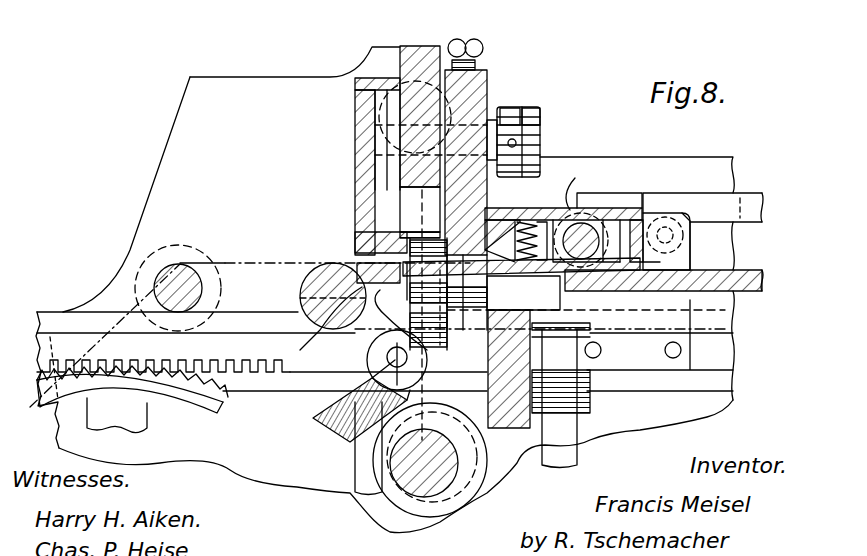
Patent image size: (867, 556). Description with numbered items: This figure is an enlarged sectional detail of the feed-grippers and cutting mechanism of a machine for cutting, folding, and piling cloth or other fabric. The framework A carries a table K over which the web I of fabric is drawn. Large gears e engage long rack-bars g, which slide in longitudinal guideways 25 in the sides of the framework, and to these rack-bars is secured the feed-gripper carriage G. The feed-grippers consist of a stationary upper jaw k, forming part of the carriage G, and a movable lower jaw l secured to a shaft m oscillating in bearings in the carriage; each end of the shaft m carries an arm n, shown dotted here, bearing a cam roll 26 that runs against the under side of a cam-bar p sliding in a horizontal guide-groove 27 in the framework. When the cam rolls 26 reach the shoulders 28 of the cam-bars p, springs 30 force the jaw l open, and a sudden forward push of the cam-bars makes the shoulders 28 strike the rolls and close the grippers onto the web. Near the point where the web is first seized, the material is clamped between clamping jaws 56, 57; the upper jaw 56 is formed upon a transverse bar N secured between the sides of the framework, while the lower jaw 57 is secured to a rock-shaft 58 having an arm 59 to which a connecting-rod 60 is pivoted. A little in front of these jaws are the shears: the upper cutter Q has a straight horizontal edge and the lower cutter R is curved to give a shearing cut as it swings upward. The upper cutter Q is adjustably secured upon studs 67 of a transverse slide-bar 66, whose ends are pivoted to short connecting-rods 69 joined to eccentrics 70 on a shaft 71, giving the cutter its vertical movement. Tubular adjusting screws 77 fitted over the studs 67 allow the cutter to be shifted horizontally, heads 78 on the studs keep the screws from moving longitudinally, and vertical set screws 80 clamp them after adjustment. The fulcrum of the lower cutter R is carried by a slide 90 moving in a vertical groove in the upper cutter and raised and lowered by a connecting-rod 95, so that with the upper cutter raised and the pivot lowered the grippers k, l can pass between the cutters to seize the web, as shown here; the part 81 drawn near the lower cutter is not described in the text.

The framework A is at (396, 290).
The rack-bars g is at (163, 355).
The large gears e is at (168, 393).
The web I is at (290, 263).
The movable clamping jaw 57 is at (312, 292).
The rock-shaft 58 is at (305, 301).
The stationary clamping jaw 56 is at (362, 234).
The transverse bar N is at (356, 158).
The transverse slide-bar 66 is at (423, 100).
The set screws 80 is at (480, 42).
The upper cutter Q is at (484, 74).
The studs 67 is at (543, 141).
The tubular adjusting screws 77 is at (505, 110).
The heads 78 is at (532, 107).
The stationary upper gripper jaw k is at (482, 228).
The springs 30 is at (522, 214).
The guide-groove 27 is at (612, 200).
The shaft m is at (586, 219).
The cam roll 26 is at (664, 220).
The shoulder 28 is at (686, 212).
The cam-bar p is at (702, 207).
The feed-gripper carriage G is at (690, 252).
The arm or lever n is at (656, 263).
The table K is at (762, 279).
The movable lower gripper jaw l is at (521, 284).
The lower cutter R is at (500, 430).
The pin 81 is at (578, 461).
The arm or lever 59 is at (363, 338).
The slide 90 is at (457, 340).
The connecting-rod 60 is at (333, 420).
The connecting-rod 95 is at (355, 455).
The eccentrics 70 is at (480, 483).
The short connecting-rods 69 is at (468, 407).
The shaft 71 is at (440, 488).
The longitudinal grooves or guideways 25 is at (714, 356).